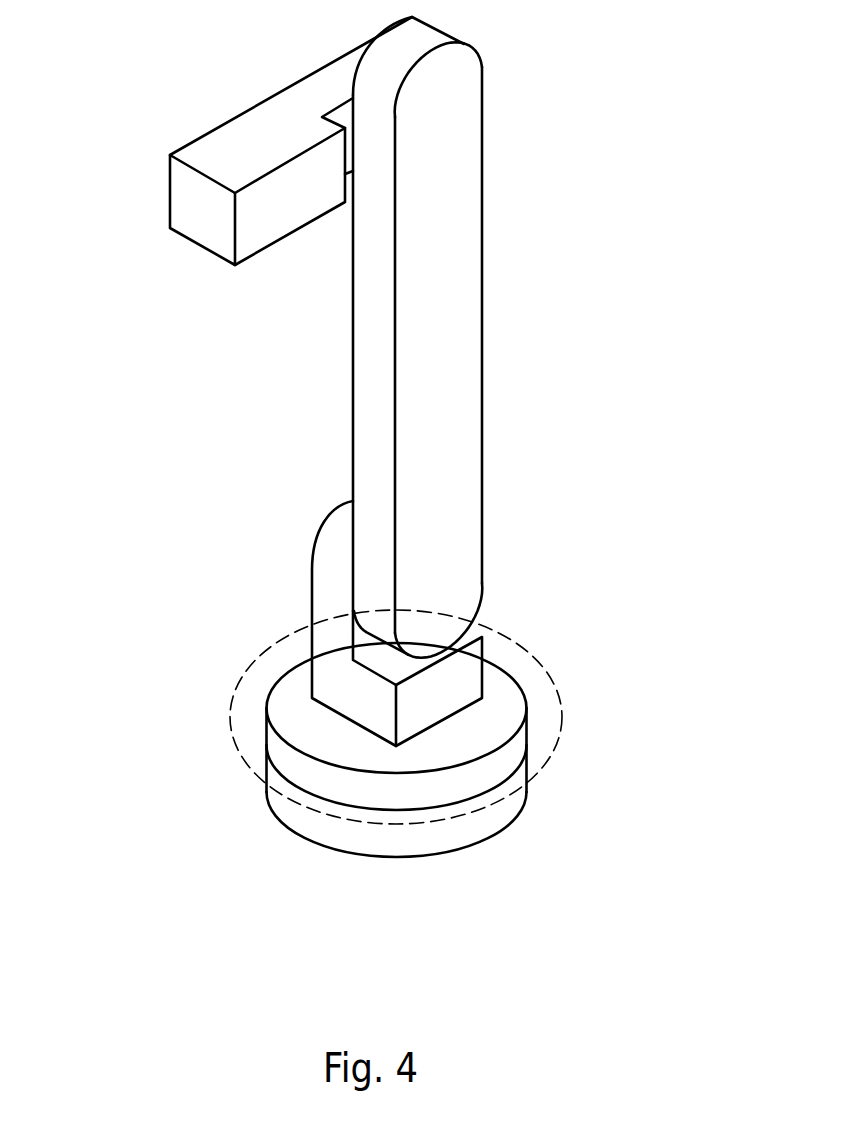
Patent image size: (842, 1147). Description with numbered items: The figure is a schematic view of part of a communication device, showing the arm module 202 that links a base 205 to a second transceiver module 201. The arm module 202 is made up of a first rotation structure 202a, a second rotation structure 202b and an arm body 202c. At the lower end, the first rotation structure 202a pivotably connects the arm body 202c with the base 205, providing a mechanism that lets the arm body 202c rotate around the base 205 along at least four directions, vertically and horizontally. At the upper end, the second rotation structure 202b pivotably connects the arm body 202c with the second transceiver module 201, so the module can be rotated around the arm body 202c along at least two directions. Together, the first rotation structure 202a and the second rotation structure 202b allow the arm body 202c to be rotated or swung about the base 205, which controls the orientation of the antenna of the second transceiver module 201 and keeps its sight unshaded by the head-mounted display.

The second transceiver module 201 is at (202, 215).
The arm module 202 is at (476, 420).
The first rotation structure 202a is at (441, 662).
The second rotation structure 202b is at (442, 73).
The arm body 202c is at (463, 391).
The base 205 is at (460, 830).